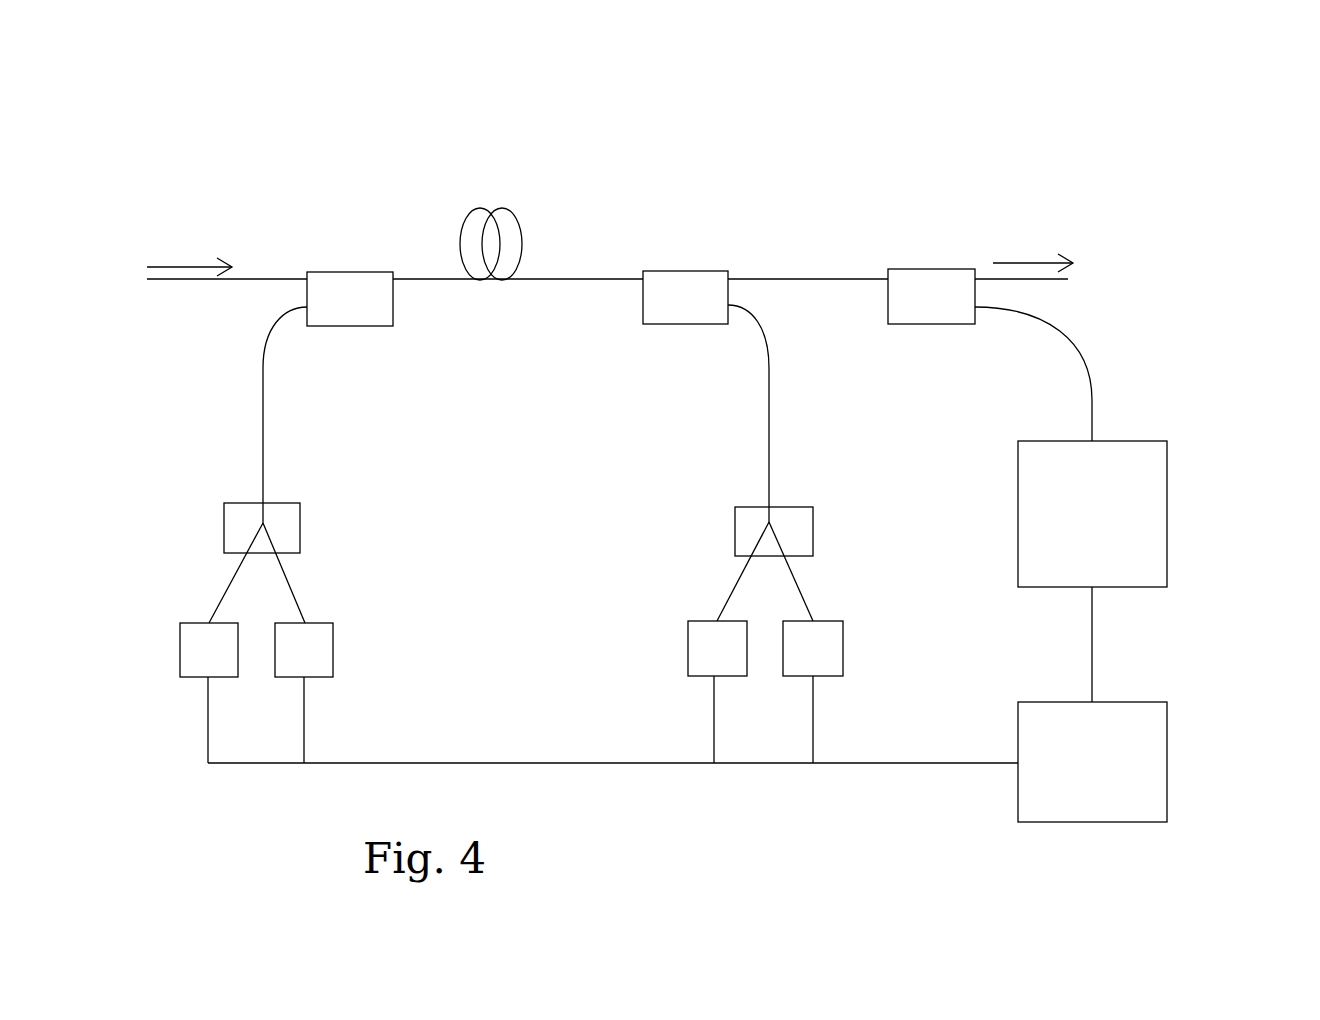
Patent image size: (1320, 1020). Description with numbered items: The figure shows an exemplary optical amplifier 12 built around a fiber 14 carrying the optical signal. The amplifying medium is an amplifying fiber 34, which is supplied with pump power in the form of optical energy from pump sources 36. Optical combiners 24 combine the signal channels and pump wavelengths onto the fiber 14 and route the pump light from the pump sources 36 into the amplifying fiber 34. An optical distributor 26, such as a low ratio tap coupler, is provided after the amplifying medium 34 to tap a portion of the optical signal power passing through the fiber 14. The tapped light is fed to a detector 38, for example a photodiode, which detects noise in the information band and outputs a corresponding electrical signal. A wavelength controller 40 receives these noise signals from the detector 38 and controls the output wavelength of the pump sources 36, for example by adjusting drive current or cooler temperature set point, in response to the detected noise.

The optical amplifier 12 is at (886, 129).
The fiber 14 is at (180, 280).
The optical combiner 24 is at (348, 326).
The optical distributor 26 is at (931, 324).
The amplifying fiber 34 is at (514, 212).
The pump source 36 is at (289, 678).
The detector 38 is at (1167, 514).
The wavelength controller 40 is at (1167, 760).